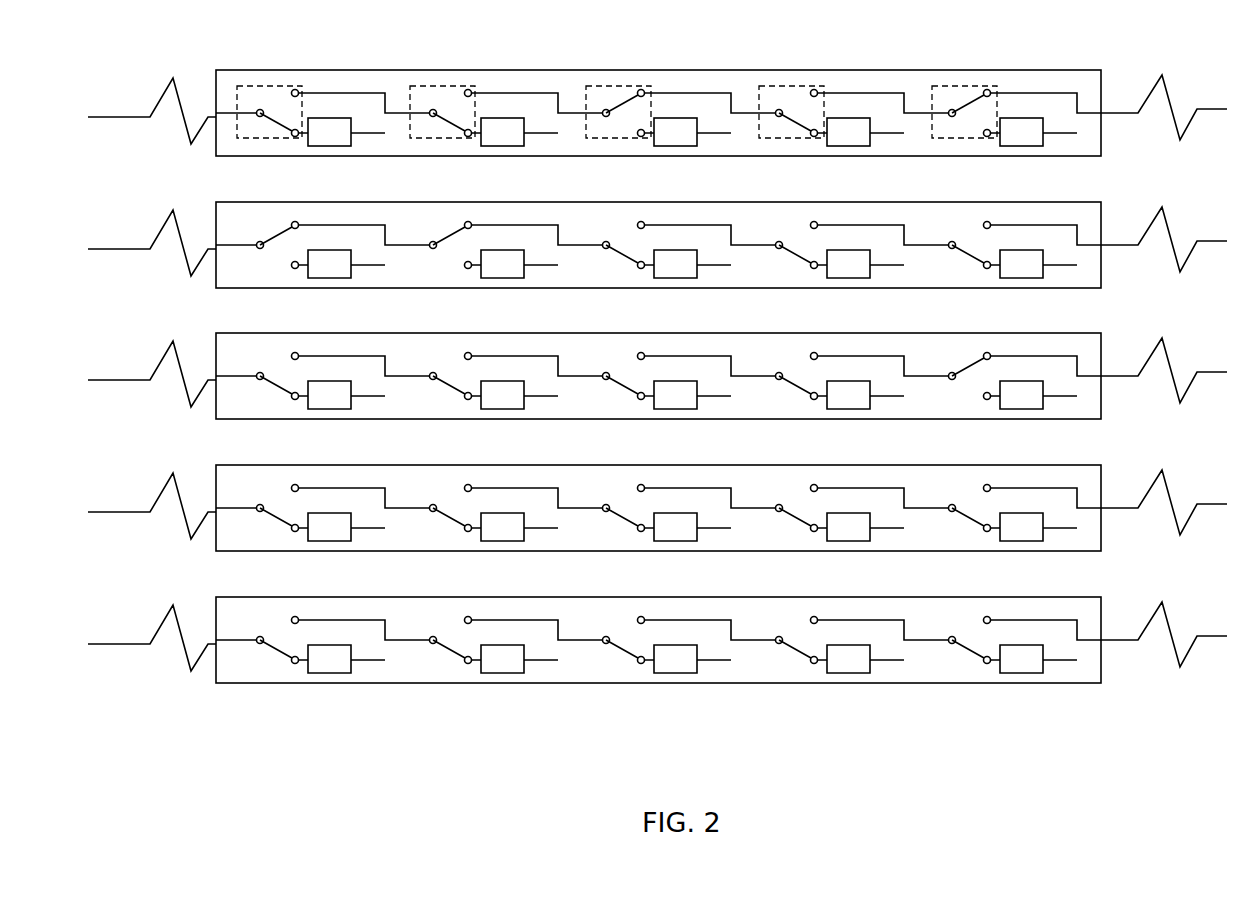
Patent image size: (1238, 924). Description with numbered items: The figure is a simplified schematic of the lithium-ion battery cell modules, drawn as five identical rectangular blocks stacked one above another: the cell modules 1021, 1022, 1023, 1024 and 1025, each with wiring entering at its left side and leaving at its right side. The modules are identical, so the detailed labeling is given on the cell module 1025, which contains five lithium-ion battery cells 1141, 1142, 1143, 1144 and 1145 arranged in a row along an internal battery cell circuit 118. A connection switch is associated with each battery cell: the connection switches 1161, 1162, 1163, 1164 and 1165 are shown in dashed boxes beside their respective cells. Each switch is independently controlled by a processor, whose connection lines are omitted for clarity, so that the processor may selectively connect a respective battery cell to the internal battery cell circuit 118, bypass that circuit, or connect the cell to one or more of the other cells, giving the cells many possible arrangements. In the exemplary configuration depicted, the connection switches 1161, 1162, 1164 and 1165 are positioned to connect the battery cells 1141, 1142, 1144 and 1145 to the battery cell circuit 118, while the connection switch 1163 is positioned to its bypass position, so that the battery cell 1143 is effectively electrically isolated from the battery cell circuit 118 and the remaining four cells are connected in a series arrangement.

The lithium-ion battery cell module 1021 is at (1095, 597).
The lithium-ion battery cell module 1022 is at (1090, 465).
The lithium-ion battery cell module 1023 is at (1083, 333).
The lithium-ion battery cell module 1024 is at (1087, 202).
The lithium-ion battery cell module 1025 is at (657, 112).
The lithium-ion battery cell 1141 is at (327, 146).
The lithium-ion battery cell 1142 is at (496, 146).
The lithium-ion battery cell 1143 is at (680, 146).
The lithium-ion battery cell 1144 is at (855, 146).
The lithium-ion battery cell 1145 is at (1028, 146).
The connection switch 1161 is at (266, 86).
The connection switch 1162 is at (438, 86).
The connection switch 1163 is at (612, 86).
The connection switch 1164 is at (785, 86).
The connection switch 1165 is at (959, 86).
The internal battery cell circuit 118 is at (362, 93).